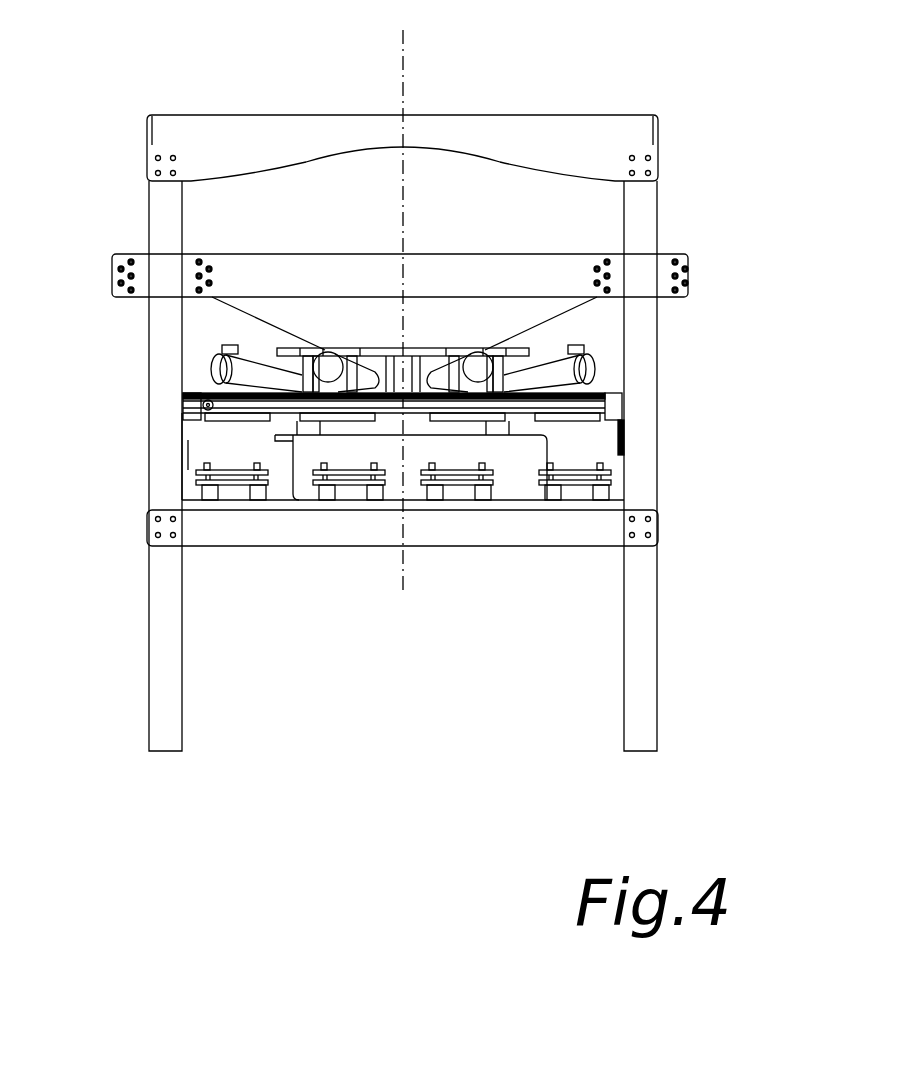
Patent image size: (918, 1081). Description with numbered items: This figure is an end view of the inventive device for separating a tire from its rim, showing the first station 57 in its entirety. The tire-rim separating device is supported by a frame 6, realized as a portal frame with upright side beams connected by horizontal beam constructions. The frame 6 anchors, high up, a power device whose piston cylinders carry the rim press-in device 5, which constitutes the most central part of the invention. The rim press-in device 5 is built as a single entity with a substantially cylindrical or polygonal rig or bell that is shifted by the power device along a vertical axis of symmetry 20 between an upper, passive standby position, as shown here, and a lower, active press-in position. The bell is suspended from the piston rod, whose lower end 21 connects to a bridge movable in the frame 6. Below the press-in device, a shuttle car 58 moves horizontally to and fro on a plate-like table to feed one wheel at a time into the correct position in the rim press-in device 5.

The first station 57 is at (700, 90).
The frame 6 is at (660, 160).
The rim press-in device 5 is at (595, 348).
The lower end 21 is at (300, 352).
The axis of symmetry 20 is at (397, 570).
The shuttle car 58 is at (482, 485).